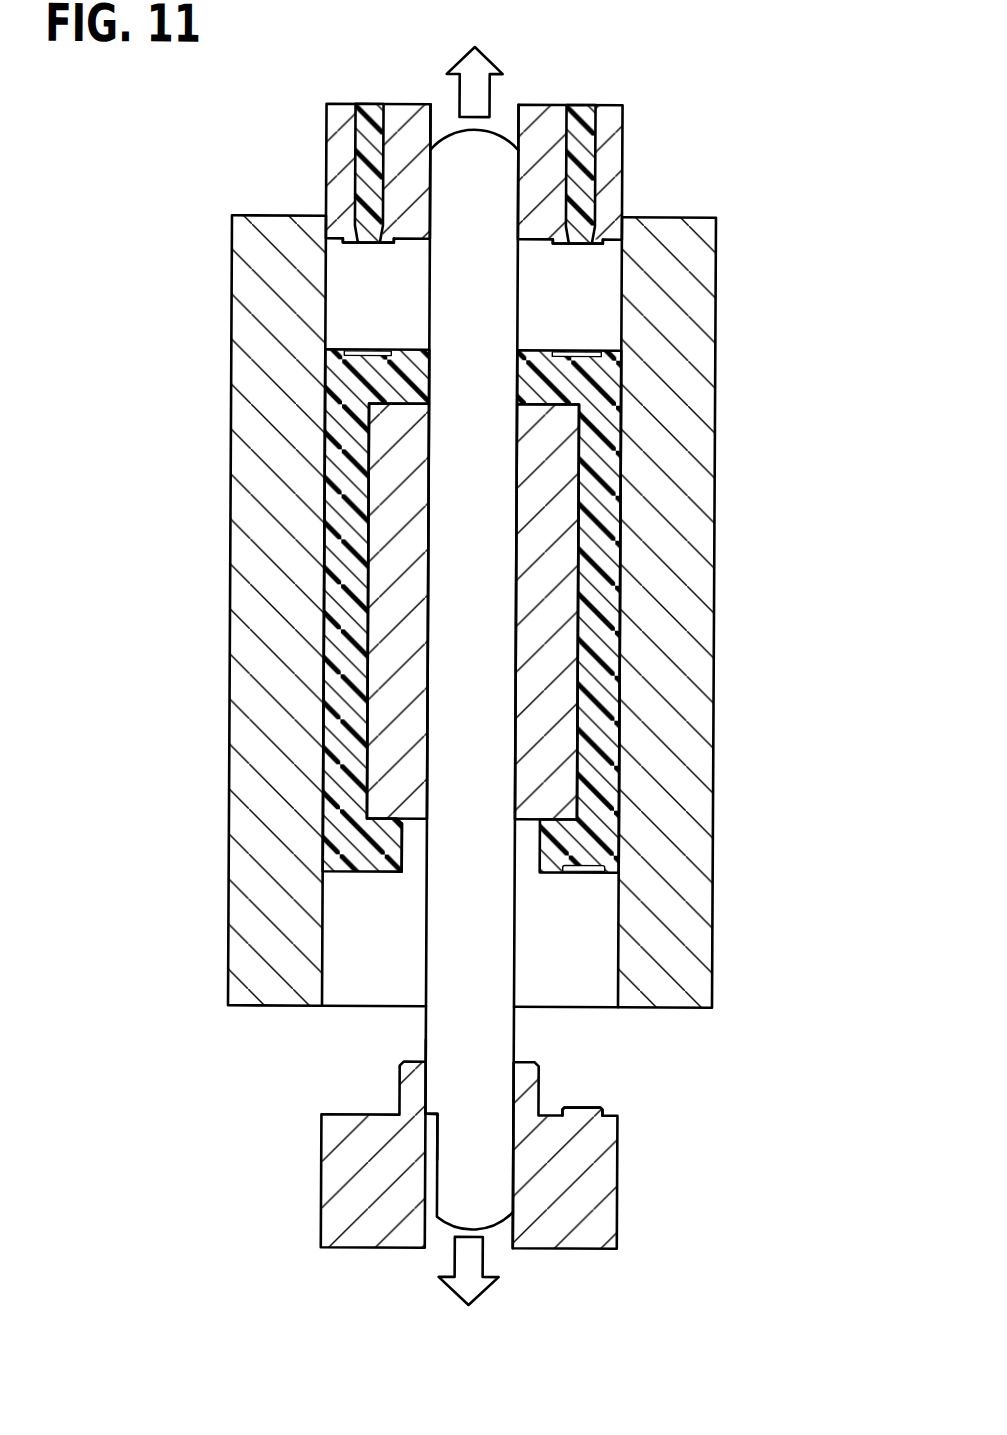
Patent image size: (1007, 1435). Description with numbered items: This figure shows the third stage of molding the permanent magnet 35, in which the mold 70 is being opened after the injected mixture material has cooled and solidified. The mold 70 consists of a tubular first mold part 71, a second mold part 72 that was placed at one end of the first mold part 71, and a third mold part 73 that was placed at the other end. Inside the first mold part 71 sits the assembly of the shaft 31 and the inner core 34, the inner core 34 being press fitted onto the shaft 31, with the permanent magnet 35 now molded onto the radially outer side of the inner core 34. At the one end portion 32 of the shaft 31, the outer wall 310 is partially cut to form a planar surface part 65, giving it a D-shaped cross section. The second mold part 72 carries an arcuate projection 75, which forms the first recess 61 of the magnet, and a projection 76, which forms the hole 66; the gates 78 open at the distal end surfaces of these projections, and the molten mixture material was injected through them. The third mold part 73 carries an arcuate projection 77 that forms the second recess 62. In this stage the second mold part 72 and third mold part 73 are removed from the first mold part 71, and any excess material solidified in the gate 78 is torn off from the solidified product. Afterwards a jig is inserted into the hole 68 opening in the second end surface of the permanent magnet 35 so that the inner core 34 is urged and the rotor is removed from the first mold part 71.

The mold 70 is at (435, 648).
The first mold part 71 is at (240, 630).
The second mold part 72 is at (608, 162).
The third mold part 73 is at (583, 1190).
The projection 75 is at (351, 242).
The projection 76 is at (595, 243).
The projection 77 is at (585, 1107).
The gate 78 is at (369, 112).
The first recess 61 is at (371, 350).
The hole 66 is at (585, 352).
The second recess 62 is at (588, 873).
The hole 68 is at (415, 852).
The planar surface part 65 is at (441, 1168).
The shaft 31 is at (492, 480).
The one end portion 32 is at (490, 1167).
The outer wall 310 is at (427, 1050).
The inner core 34 is at (547, 655).
The permanent magnet 35 is at (600, 567).